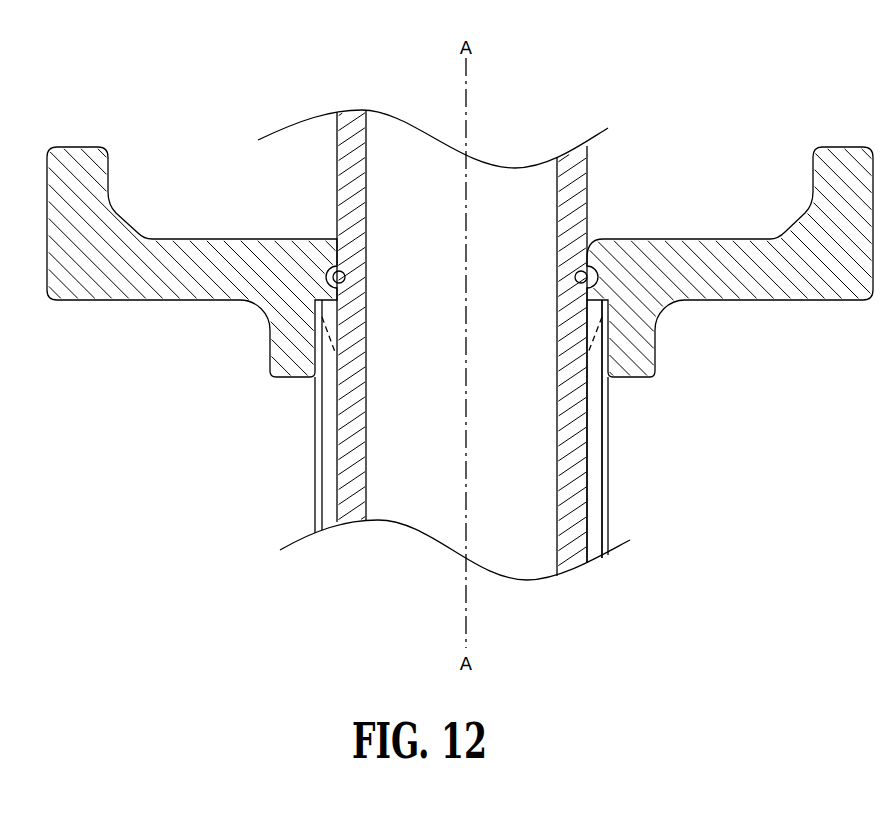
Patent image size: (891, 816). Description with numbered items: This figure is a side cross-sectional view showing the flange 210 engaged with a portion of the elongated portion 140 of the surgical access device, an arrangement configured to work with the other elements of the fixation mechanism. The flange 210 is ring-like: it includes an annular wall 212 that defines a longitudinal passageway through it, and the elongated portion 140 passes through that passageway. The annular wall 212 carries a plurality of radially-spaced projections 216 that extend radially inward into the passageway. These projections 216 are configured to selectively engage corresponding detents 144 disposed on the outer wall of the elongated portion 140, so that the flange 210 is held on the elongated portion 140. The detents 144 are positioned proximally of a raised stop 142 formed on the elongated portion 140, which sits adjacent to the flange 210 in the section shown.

The elongated portion 140 is at (349, 128).
The flange 210 is at (187, 238).
The annular wall 212 is at (335, 298).
The raised stop 142 is at (593, 310).
The projections 216 is at (340, 277).
The detents 144 is at (577, 277).